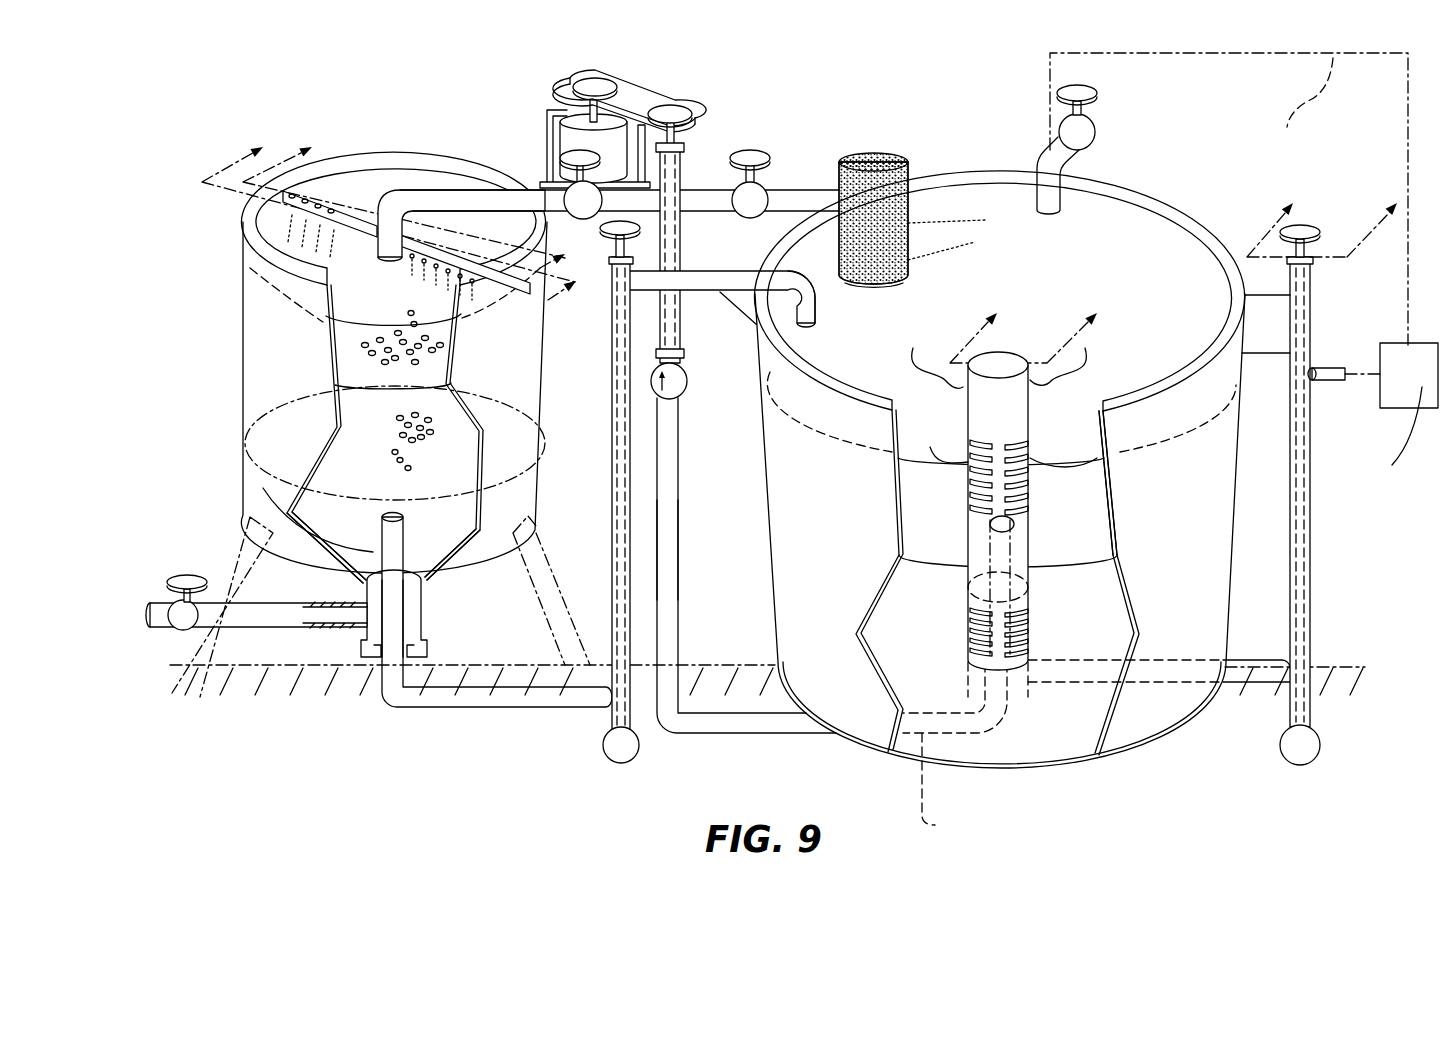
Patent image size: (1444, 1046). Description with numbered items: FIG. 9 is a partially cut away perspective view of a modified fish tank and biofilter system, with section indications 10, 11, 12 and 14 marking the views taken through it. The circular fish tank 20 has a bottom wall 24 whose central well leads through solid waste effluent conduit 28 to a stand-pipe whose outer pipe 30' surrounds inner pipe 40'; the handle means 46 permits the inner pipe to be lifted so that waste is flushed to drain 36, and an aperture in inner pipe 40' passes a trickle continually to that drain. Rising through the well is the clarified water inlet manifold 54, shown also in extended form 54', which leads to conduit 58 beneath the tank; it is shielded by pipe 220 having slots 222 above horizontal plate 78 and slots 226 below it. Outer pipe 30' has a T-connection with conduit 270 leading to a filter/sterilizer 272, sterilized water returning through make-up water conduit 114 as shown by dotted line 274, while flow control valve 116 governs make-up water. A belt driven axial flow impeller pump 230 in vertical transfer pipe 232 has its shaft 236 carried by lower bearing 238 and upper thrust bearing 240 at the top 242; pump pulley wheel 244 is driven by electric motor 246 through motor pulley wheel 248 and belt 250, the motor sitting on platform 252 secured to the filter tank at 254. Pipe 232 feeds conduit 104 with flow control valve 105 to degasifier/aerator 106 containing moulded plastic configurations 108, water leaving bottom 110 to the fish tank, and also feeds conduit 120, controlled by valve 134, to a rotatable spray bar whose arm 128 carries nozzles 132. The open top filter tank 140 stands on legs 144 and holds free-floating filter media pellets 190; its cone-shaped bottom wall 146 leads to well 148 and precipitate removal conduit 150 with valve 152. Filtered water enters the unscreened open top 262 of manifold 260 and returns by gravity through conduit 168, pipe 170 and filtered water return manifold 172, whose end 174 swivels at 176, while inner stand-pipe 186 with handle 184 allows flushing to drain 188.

The section line 10- 10 is at (389, 232).
The section line 11- 11 is at (1325, 230).
The section line 12- 12 is at (1024, 338).
The section line 14- 14 is at (420, 193).
The fish tank 20 is at (1165, 176).
The bottom wall 24 is at (1180, 735).
The solid waste effluent conduit 28 is at (1240, 683).
The outer pipe 30' is at (1368, 623).
The drain 36 is at (1300, 762).
The inner pipe 40' is at (1334, 492).
The handle means 46 is at (1308, 230).
The inlet manifold 54 is at (1006, 582).
The extended inlet 54' is at (1080, 483).
The conduit 58 is at (965, 749).
The horizontal plate 78 is at (1028, 590).
The conduit 104 is at (790, 190).
The flow control valve 105 is at (760, 158).
The degasifier/aerator 106 is at (880, 150).
The moulded plastic configurations 108 is at (985, 220).
The bottom 110 is at (880, 285).
The make-up water conduit 114 is at (1040, 195).
The flow control valve 116 is at (1090, 126).
The conduit 120 is at (390, 200).
The arm 128 is at (310, 205).
The nozzles 132 is at (290, 203).
The valve 134 is at (565, 152).
The filter tank 140 is at (228, 294).
The legs 144 is at (240, 555).
The cone-shaped bottom wall 146 is at (300, 615).
The well 148 is at (422, 618).
The precipitate removal conduit 150 is at (263, 623).
The valve 152 is at (168, 583).
The conduit 168 is at (410, 705).
The pipe 170 is at (610, 517).
The filtered water return manifold 172 is at (655, 300).
The end 174 is at (775, 330).
The swivel 176 is at (760, 300).
The handle 184 is at (610, 250).
The inner stand-pipe 186 is at (630, 483).
The drain 188 is at (603, 750).
The filter media pellets 190 is at (350, 348).
The pipe 220 is at (1018, 415).
The slots 222 is at (1030, 500).
The slots 226 is at (968, 612).
The axial flow impeller pump 230 is at (671, 399).
The vertical transfer pipe 232 is at (682, 548).
The shaft 236 is at (685, 245).
The lower bearing 238 is at (683, 353).
The upper thrust bearing 240 is at (683, 148).
The top 242 is at (683, 162).
The pump pulley wheel 244 is at (676, 112).
The electric motor 246 is at (591, 105).
The motor pulley wheel 248 is at (592, 80).
The belt 250 is at (645, 90).
The platform 252 is at (563, 128).
The securing point 254 is at (550, 180).
The manifold 260 is at (323, 577).
The open top 262 is at (343, 563).
The conduit 270 is at (1335, 330).
The filter/sterilizer 272 is at (1400, 383).
The dotted line 274 is at (1303, 105).